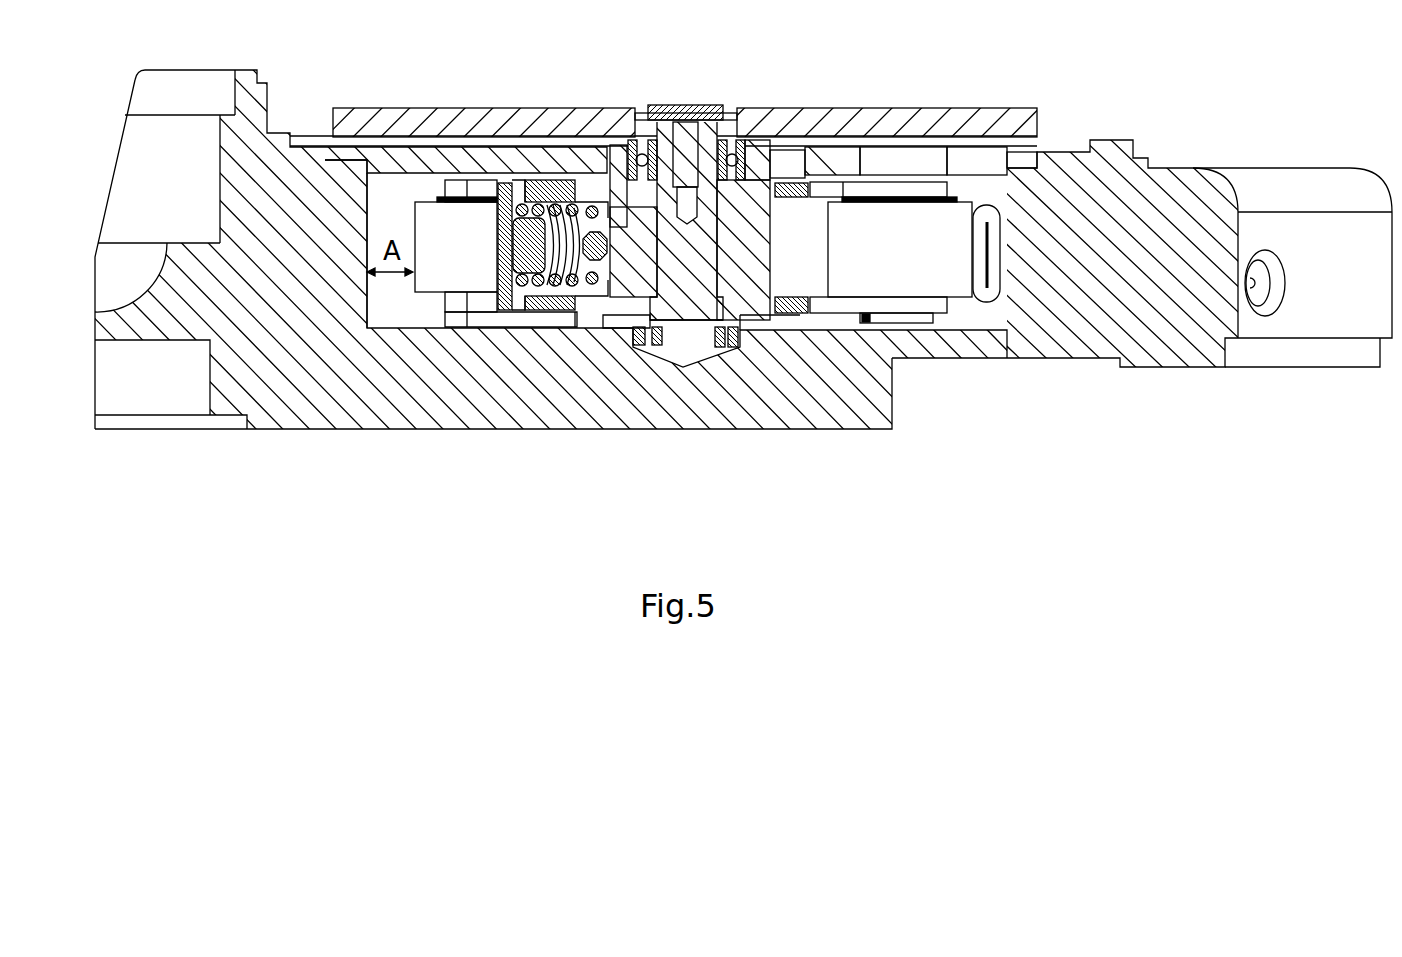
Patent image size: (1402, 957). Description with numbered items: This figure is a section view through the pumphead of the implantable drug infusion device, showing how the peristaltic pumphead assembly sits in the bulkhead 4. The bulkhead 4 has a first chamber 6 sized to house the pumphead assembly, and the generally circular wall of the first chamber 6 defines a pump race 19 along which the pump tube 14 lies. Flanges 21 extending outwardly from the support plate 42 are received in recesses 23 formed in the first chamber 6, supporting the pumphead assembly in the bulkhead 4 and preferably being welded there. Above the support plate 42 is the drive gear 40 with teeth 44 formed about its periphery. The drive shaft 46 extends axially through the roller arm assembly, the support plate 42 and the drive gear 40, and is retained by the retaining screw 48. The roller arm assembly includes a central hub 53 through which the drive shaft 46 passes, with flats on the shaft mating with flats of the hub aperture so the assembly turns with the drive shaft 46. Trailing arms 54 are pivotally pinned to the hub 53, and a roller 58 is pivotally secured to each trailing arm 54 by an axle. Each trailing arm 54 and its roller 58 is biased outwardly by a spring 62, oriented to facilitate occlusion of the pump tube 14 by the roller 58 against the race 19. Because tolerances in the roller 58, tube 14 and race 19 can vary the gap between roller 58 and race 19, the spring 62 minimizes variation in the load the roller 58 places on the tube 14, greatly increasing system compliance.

The bulkhead 4 is at (325, 415).
The first chamber 6 is at (417, 323).
The pump tube 14 is at (985, 298).
The pump race 19 is at (365, 305).
The flanges 21 is at (1020, 152).
The recesses 23 is at (1037, 152).
The drive gear 40 is at (870, 122).
The support plate 42 is at (852, 165).
The teeth 44 is at (340, 110).
The drive shaft 46 is at (698, 297).
The retaining screw 48 is at (710, 110).
The central hub 53 is at (630, 290).
The trailing arms 54 is at (850, 312).
The roller 58 is at (438, 228).
The spring 62 is at (577, 212).